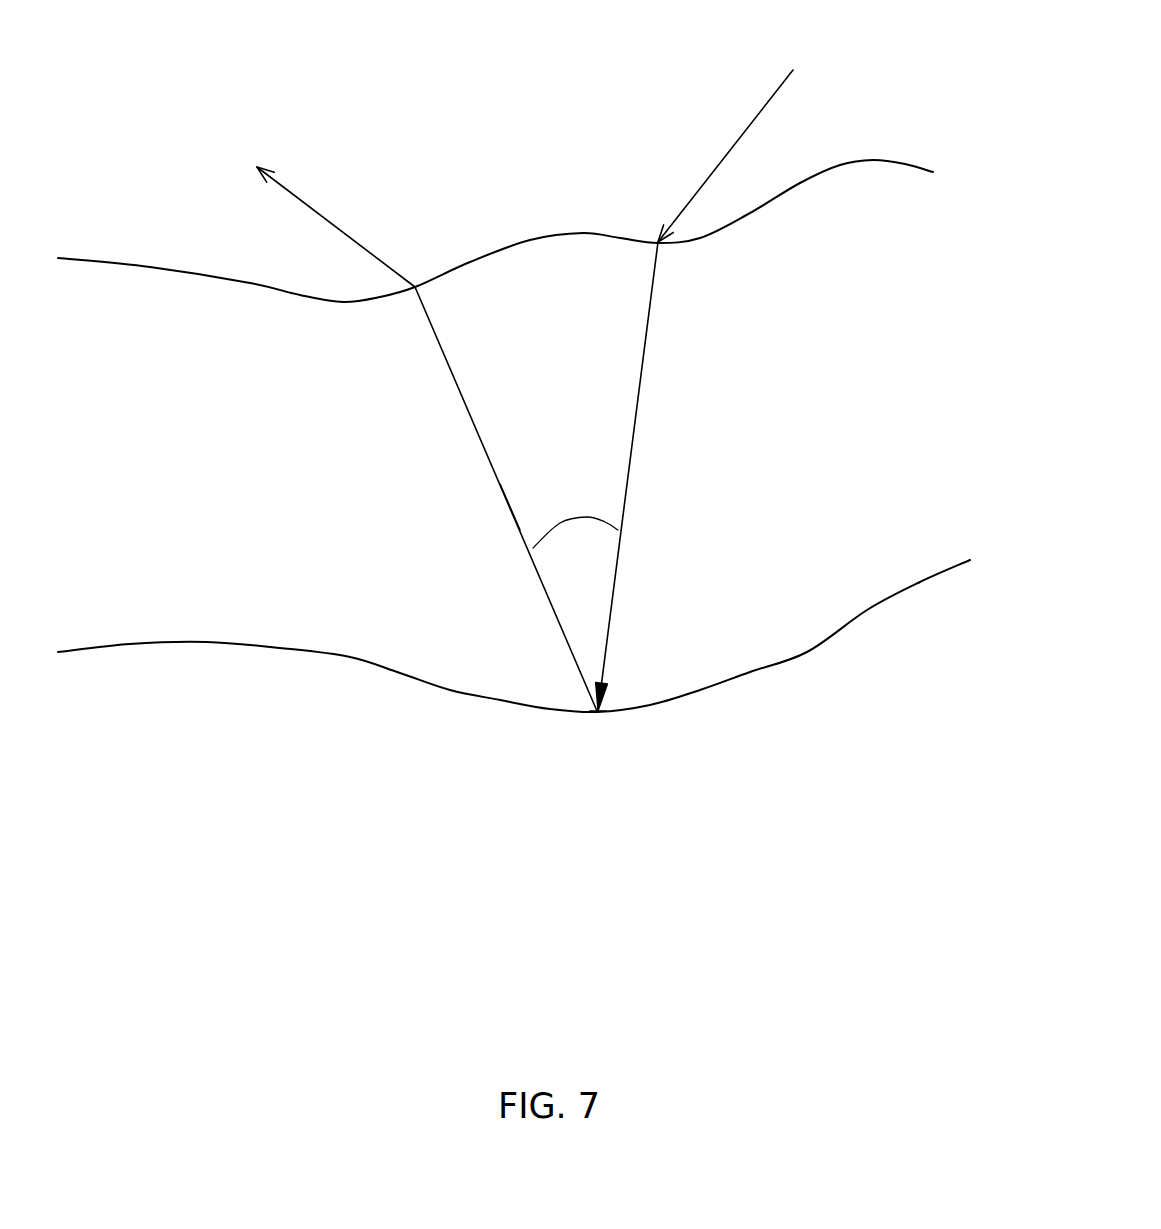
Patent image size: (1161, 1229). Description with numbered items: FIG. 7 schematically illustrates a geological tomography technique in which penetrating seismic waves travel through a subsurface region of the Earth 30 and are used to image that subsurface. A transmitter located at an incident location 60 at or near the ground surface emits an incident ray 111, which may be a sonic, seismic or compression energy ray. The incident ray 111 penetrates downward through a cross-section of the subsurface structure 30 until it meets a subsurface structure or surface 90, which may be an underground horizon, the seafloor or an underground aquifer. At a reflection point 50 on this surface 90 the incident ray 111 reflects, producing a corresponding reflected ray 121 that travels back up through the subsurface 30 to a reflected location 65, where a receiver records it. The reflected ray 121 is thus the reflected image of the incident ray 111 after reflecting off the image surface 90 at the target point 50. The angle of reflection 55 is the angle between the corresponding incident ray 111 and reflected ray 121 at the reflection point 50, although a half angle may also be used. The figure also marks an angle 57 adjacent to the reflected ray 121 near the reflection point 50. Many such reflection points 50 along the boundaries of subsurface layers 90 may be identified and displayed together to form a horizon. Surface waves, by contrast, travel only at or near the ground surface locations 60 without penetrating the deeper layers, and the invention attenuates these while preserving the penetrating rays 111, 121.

The subsurface region of the Earth 30 is at (208, 452).
The reflection point 50 is at (603, 680).
The angle of reflection 55 is at (565, 520).
The angle of incidence 57 is at (507, 507).
The incident location 60 is at (760, 210).
The reflected location 65 is at (415, 287).
The subsurface structure or surface 90 is at (807, 650).
The incident ray 111 is at (642, 378).
The reflected ray 121 is at (467, 400).